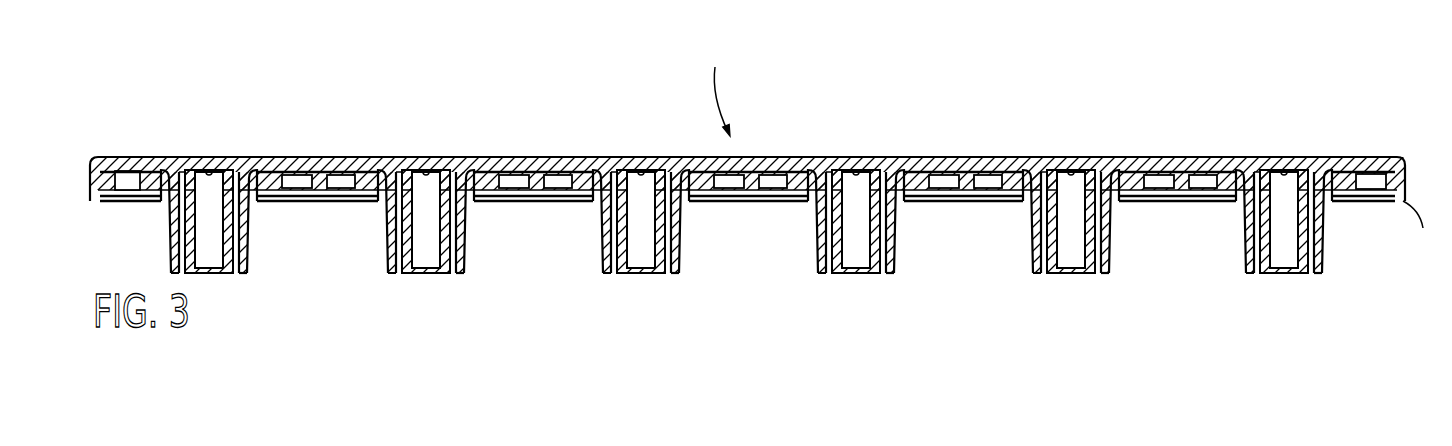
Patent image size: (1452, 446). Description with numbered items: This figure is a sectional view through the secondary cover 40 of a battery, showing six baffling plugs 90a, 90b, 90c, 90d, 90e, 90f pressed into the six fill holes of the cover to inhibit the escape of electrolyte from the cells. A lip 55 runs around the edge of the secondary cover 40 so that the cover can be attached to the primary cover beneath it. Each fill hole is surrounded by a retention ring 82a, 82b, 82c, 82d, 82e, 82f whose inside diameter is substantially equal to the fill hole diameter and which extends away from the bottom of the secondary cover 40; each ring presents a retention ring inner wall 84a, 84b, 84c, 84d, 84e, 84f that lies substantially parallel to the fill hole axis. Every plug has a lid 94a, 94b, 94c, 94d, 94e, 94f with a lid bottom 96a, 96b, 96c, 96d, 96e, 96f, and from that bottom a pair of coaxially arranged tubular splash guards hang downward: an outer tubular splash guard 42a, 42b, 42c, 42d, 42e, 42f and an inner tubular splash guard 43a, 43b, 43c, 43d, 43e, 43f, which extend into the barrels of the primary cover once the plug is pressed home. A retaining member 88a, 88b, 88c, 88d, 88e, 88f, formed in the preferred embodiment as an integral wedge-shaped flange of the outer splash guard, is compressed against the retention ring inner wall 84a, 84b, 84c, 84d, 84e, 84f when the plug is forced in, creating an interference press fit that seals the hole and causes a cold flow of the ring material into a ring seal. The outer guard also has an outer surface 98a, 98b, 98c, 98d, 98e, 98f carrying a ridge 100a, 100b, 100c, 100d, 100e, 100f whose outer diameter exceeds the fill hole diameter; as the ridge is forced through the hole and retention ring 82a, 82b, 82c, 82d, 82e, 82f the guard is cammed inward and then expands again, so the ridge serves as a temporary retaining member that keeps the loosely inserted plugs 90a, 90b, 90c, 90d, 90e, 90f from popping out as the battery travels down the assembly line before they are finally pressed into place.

The secondary cover 40 is at (717, 88).
The lip 55 is at (1419, 231).
The baffling plug 90a is at (226, 182).
The baffling plug 90b is at (414, 211).
The baffling plug 90c is at (630, 211).
The baffling plug 90d is at (845, 211).
The baffling plug 90e is at (1060, 211).
The baffling plug 90f is at (1260, 211).
The lid 94a is at (180, 157).
The lid 94b is at (397, 157).
The lid 94c is at (612, 157).
The lid 94d is at (827, 157).
The lid 94e is at (1042, 157).
The lid 94f is at (1255, 157).
The lid bottom 96a is at (211, 157).
The lid bottom 96b is at (428, 157).
The lid bottom 96c is at (643, 157).
The lid bottom 96d is at (858, 157).
The lid bottom 96e is at (1073, 157).
The lid bottom 96f is at (1286, 157).
The retention ring inner wall 84a is at (231, 157).
The retention ring inner wall 84b is at (448, 157).
The retention ring inner wall 84c is at (663, 157).
The retention ring inner wall 84d is at (878, 157).
The retention ring inner wall 84e is at (1093, 157).
The retention ring inner wall 84f is at (1306, 157).
The retention ring 82a is at (155, 205).
The retention ring 82b is at (367, 203).
The retention ring 82c is at (582, 203).
The retention ring 82d is at (797, 203).
The retention ring 82e is at (1012, 203).
The retention ring 82f is at (1225, 203).
The retaining member 88a is at (251, 203).
The retaining member 88b is at (468, 203).
The retaining member 88c is at (683, 203).
The retaining member 88d is at (898, 203).
The retaining member 88e is at (1113, 203).
The retaining member 88f is at (1326, 203).
The outer surface 98a is at (166, 257).
The outer surface 98b is at (383, 257).
The outer surface 98c is at (598, 257).
The outer surface 98d is at (813, 257).
The outer surface 98e is at (1028, 257).
The outer surface 98f is at (1241, 257).
The ridge 100a is at (250, 232).
The ridge 100b is at (467, 232).
The ridge 100c is at (682, 232).
The ridge 100d is at (897, 232).
The ridge 100e is at (1112, 232).
The ridge 100f is at (1325, 232).
The outer tubular splash guard 42a is at (246, 267).
The outer tubular splash guard 42b is at (463, 267).
The outer tubular splash guard 42c is at (678, 267).
The outer tubular splash guard 42d is at (893, 267).
The outer tubular splash guard 42e is at (1108, 267).
The outer tubular splash guard 42f is at (1321, 267).
The inner tubular splash guard 43a is at (205, 266).
The inner tubular splash guard 43b is at (422, 266).
The inner tubular splash guard 43c is at (637, 266).
The inner tubular splash guard 43d is at (852, 266).
The inner tubular splash guard 43e is at (1067, 266).
The inner tubular splash guard 43f is at (1280, 266).